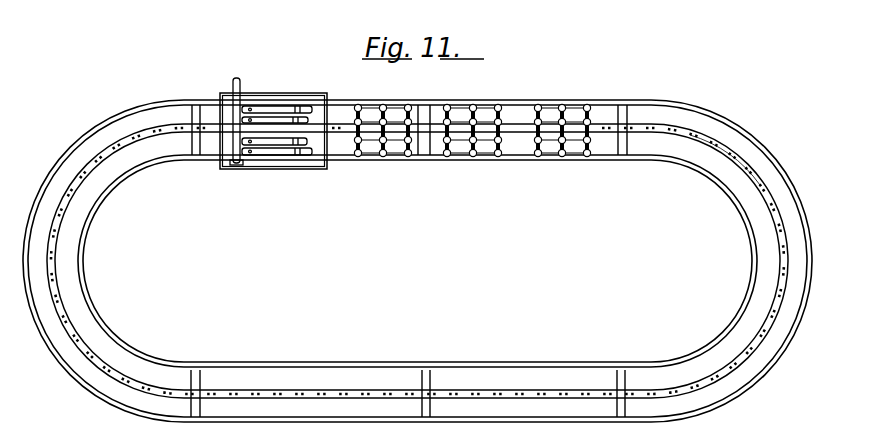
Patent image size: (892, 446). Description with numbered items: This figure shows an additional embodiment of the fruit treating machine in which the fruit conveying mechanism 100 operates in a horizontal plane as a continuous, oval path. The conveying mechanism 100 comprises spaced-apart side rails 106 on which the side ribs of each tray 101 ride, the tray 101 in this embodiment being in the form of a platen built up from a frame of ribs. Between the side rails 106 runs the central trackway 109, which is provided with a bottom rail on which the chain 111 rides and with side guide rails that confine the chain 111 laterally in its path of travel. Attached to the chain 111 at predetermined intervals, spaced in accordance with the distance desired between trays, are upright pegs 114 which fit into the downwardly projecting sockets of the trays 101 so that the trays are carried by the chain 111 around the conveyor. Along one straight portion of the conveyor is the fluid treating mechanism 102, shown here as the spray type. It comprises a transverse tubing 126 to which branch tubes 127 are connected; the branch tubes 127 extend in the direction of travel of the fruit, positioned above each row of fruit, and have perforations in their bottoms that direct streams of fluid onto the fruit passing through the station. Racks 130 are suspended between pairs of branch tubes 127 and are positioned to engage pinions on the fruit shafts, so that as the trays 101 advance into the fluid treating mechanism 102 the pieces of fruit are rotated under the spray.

The fruit conveying mechanism 100 is at (633, 103).
The tray 101 is at (492, 103).
The fluid treating mechanism 102 is at (310, 169).
The side rails 106 is at (677, 160).
The central trackway 109 is at (465, 391).
The chain 111 is at (253, 391).
The upright pegs 114 is at (728, 165).
The transverse tubing 126 is at (233, 81).
The branch tubes 127 is at (284, 120).
The racks 130 is at (270, 116).